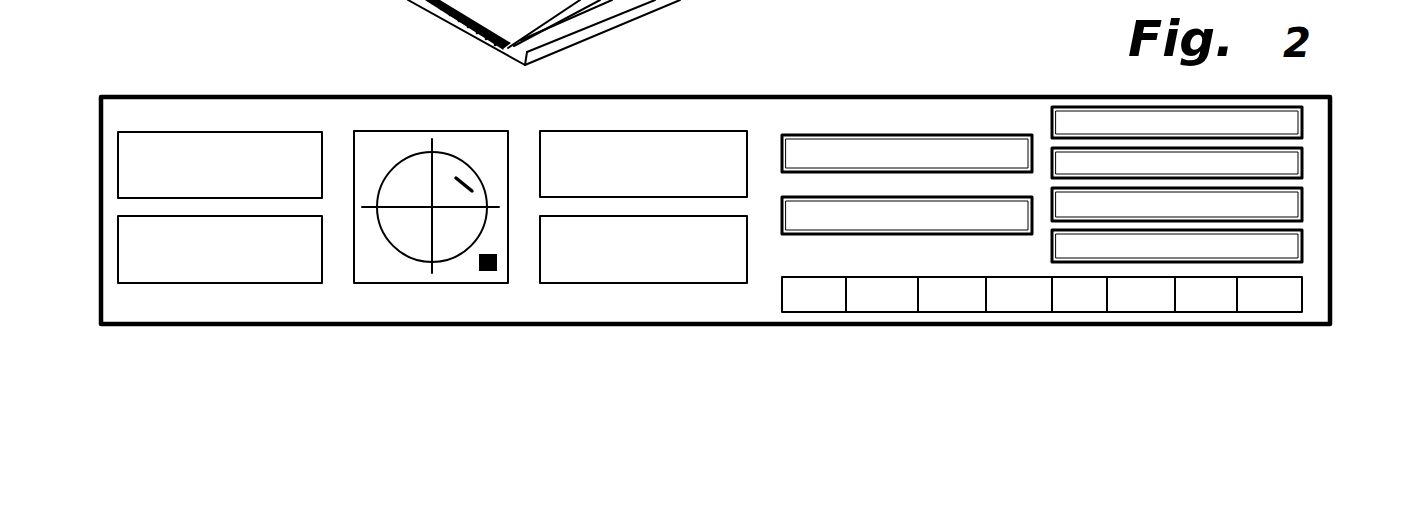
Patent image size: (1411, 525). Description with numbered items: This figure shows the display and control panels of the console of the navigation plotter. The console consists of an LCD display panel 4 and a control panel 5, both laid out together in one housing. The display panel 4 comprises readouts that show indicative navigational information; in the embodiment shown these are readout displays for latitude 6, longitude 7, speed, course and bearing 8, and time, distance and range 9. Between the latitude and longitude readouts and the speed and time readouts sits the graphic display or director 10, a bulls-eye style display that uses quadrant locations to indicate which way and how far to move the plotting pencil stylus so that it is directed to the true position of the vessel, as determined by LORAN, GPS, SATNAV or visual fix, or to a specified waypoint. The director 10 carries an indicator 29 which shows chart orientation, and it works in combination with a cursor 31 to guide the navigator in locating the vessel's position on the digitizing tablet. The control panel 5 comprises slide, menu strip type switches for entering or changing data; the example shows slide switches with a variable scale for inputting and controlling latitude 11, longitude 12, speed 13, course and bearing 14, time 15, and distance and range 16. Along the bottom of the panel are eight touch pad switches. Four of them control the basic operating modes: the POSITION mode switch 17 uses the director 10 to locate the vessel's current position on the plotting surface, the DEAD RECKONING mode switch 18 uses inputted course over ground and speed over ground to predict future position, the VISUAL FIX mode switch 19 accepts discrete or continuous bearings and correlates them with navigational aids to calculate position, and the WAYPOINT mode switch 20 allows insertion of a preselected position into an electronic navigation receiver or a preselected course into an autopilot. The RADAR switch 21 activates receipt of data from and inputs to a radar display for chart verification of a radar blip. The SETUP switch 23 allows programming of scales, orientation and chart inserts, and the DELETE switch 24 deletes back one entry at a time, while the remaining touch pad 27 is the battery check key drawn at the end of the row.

The LCD display panel 4 is at (249, 88).
The control panel 5 is at (1004, 85).
The latitude readout display 6 is at (118, 167).
The longitude readout display 7 is at (118, 250).
The speed/course/bearing readout display 8 is at (675, 131).
The time/distance/range readout display 9 is at (657, 284).
The director 10 is at (430, 285).
The latitude slide switch 11 is at (843, 135).
The longitude slide switch 12 is at (782, 213).
The speed slide switch 13 is at (1302, 124).
The course and bearing slide switch 14 is at (1302, 164).
The time slide switch 15 is at (1302, 204).
The distance and range slide switch 16 is at (1302, 246).
The POSITION mode switch 17 is at (955, 313).
The DEAD RECKONING mode switch 18 is at (1090, 313).
The VISUAL FIX mode switch 19 is at (1133, 313).
The WAYPOINT mode switch 20 is at (1013, 313).
The RADAR switch 21 is at (1217, 313).
The SETUP switch 23 is at (878, 313).
The DELETE switch 24 is at (817, 313).
The battery key 27 is at (1270, 313).
The indicator 29 is at (477, 160).
The cursor 31 is at (487, 285).